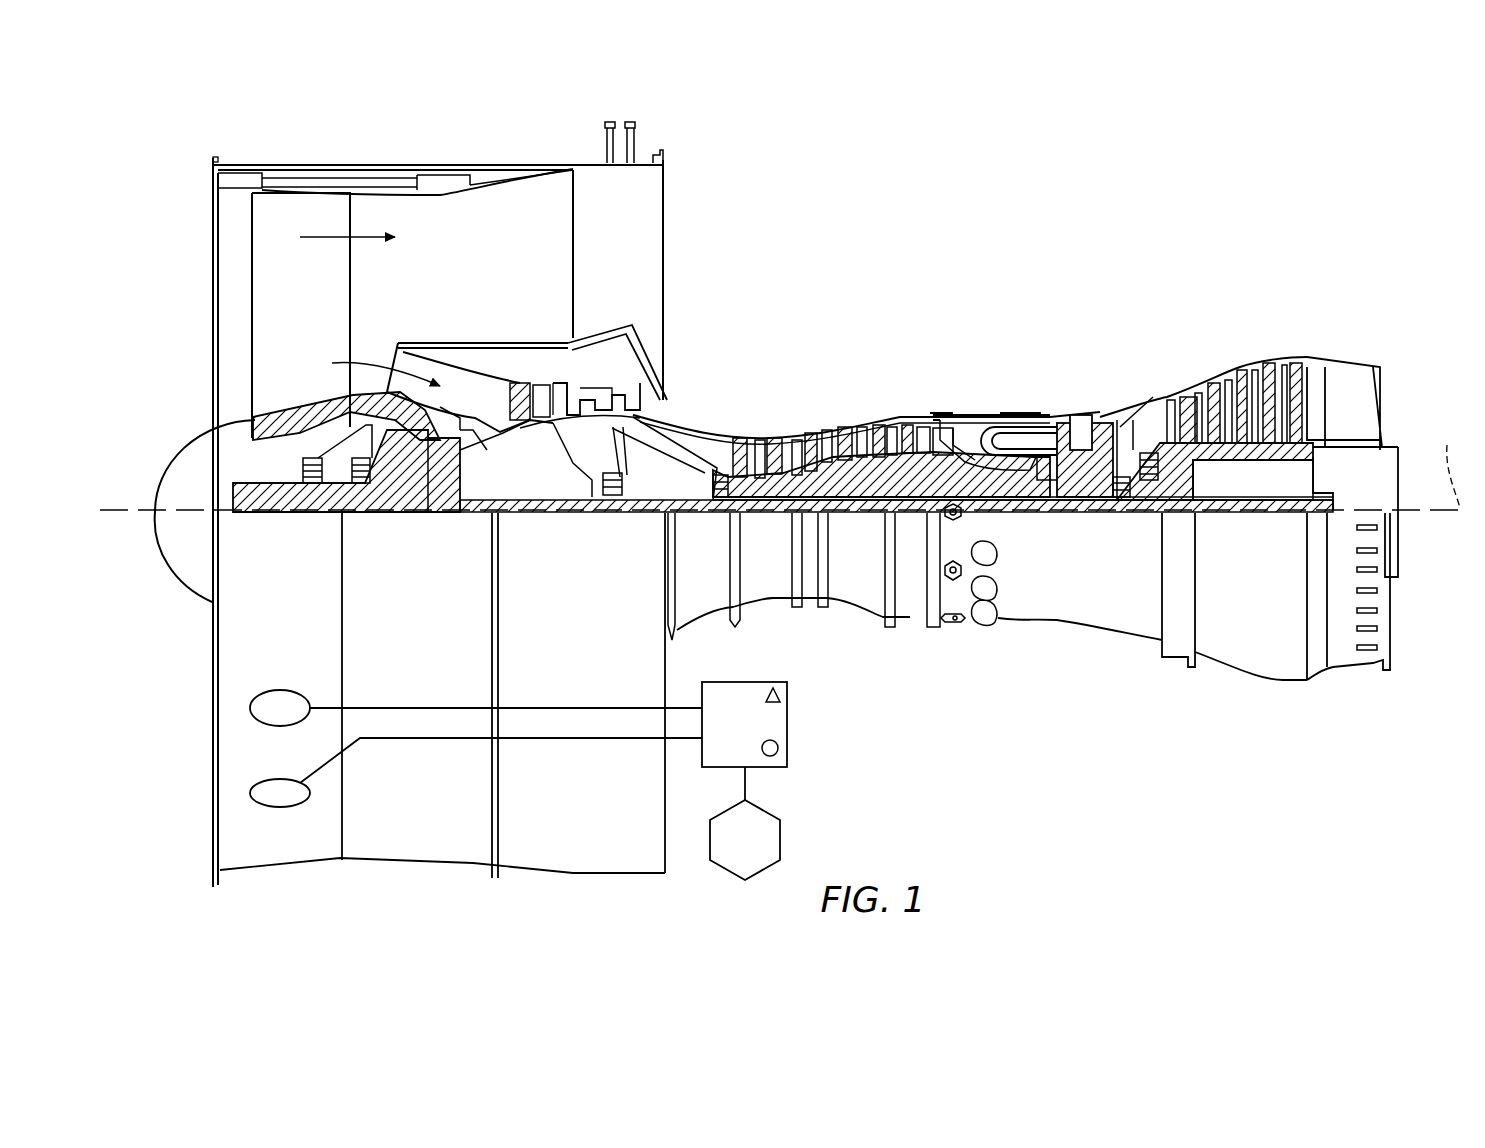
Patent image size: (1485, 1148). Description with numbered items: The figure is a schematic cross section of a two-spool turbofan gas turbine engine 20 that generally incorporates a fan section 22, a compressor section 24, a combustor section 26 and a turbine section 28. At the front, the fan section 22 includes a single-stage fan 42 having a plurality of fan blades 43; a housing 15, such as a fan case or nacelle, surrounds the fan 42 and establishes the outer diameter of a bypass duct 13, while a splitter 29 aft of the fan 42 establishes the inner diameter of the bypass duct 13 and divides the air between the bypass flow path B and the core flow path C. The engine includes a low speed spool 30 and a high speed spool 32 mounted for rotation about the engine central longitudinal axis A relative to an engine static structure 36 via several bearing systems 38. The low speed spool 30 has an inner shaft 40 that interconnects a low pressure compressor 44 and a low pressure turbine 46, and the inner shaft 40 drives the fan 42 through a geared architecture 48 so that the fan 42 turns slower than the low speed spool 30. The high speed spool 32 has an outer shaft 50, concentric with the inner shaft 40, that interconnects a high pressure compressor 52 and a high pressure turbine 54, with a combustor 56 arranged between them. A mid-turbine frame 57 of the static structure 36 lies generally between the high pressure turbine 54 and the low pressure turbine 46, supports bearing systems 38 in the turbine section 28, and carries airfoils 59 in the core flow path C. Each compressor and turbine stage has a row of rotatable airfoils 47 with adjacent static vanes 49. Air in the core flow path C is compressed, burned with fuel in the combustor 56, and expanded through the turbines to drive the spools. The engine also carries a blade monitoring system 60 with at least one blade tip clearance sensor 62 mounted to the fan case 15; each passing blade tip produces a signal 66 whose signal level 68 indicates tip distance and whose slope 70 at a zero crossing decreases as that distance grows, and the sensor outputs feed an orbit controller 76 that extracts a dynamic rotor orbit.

The gas turbine engine 20 is at (1247, 198).
The fan section 22 is at (360, 158).
The housing 15 is at (445, 168).
The bypass duct 13 is at (507, 182).
The fan 42 is at (301, 315).
The fan blades 43 is at (340, 315).
The splitter 29 is at (410, 343).
The rotatable airfoils 47 is at (518, 375).
The static vanes 49 is at (537, 377).
The low pressure compressor 44 is at (567, 397).
The compressor section 24 is at (713, 412).
The high pressure compressor 52 is at (833, 437).
The high speed spool 32 is at (917, 475).
The combustor section 26 is at (980, 397).
The combustor 56 is at (1010, 440).
The high pressure turbine 54 is at (1083, 415).
The mid-turbine frame 57 is at (1140, 402).
The turbine section 28 is at (1188, 348).
The low pressure turbine 46 is at (1238, 378).
The airfoils 59 is at (1165, 462).
The geared architecture 48 is at (447, 493).
The bearing systems 38 is at (612, 495).
The inner shaft 40 is at (688, 513).
The low speed spool 30 is at (868, 517).
The outer shaft 50 is at (1032, 490).
The engine static structure 36 is at (912, 625).
The blade tip clearance sensor 62 is at (255, 780).
The signal 66 is at (640, 708).
The blade monitoring system 60 is at (744, 741).
The signal level 68 is at (780, 693).
The slope 70 is at (778, 748).
The orbit controller 76 is at (745, 840).
The engine central longitudinal axis A is at (1450, 461).
The bypass flow path B is at (336, 237).
The core flow path C is at (374, 368).